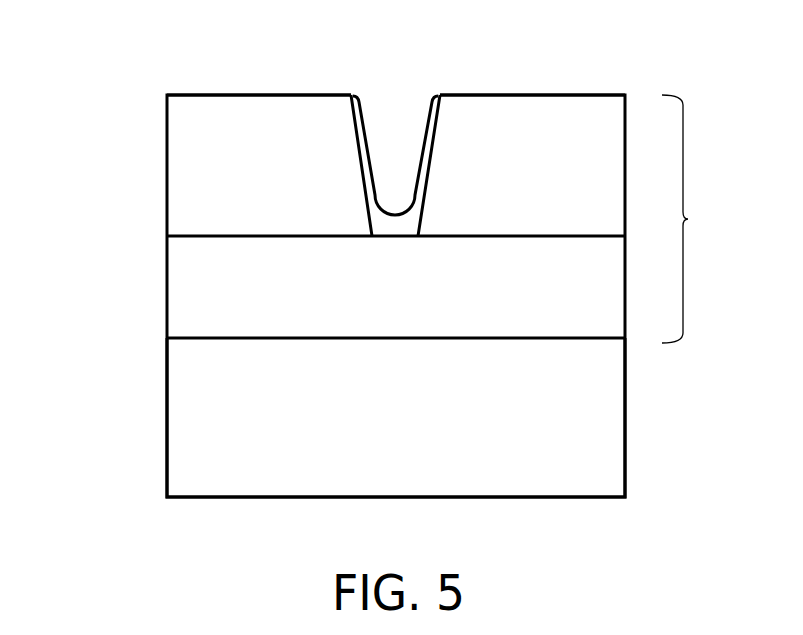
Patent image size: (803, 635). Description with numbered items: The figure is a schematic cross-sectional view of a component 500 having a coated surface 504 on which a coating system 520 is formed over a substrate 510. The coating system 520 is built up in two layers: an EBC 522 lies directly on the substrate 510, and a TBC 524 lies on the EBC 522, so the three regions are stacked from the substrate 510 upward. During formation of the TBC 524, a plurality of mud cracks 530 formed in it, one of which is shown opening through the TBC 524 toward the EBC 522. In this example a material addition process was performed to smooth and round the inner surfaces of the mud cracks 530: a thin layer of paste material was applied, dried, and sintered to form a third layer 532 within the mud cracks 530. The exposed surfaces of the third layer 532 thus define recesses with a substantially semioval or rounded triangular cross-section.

The component 500 is at (64, 68).
The coated surface 504 is at (208, 336).
The substrate 510 is at (413, 427).
The coating system 520 is at (690, 219).
The EBC 522 is at (413, 298).
The TBC 524 is at (283, 178).
The mud cracks 530 is at (433, 127).
The third layer 532 is at (366, 107).